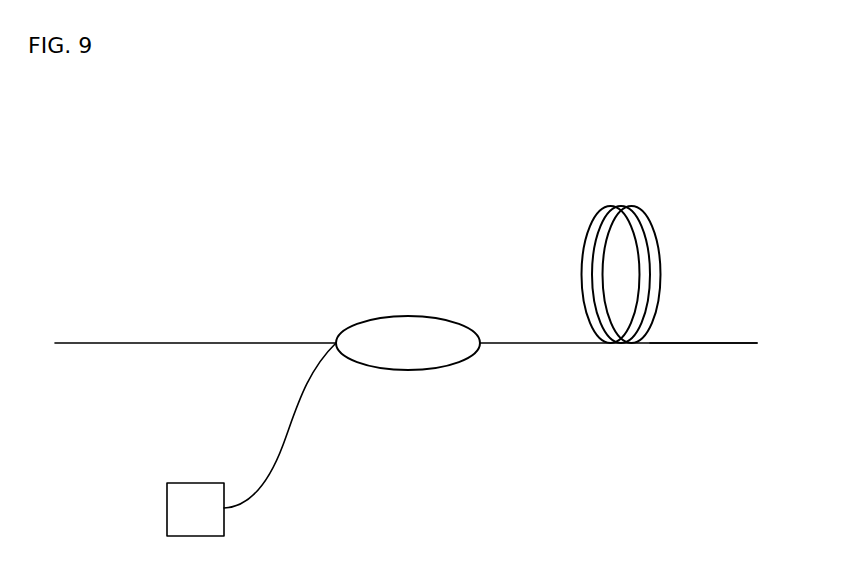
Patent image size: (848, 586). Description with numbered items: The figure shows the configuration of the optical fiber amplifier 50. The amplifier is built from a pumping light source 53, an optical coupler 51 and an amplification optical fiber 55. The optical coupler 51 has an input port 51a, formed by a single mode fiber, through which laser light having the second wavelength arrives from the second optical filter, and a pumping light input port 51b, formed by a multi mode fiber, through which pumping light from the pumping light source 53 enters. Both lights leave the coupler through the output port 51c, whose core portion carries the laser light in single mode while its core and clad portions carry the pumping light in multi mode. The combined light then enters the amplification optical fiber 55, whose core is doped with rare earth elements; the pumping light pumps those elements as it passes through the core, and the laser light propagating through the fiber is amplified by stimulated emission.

The optical fiber amplifier 50 is at (552, 190).
The optical coupler 51 is at (393, 330).
The input port 51a is at (237, 343).
The pumping light input port 51b is at (283, 447).
The output port 51c is at (535, 343).
The pumping light source 53 is at (187, 508).
The amplification optical fiber 55 is at (670, 343).